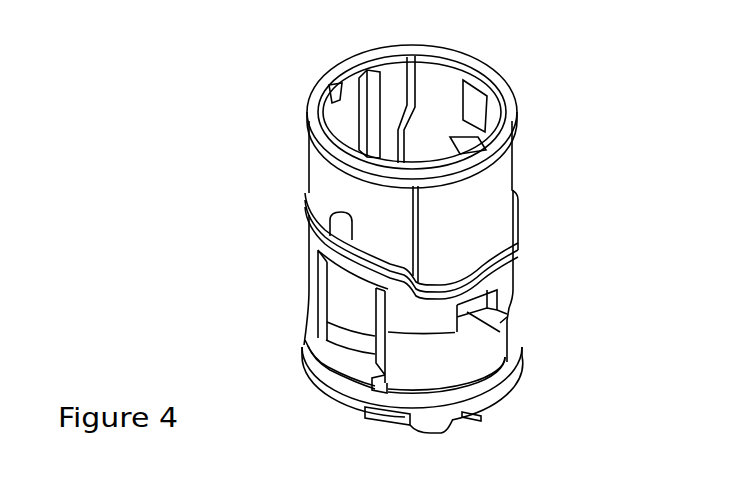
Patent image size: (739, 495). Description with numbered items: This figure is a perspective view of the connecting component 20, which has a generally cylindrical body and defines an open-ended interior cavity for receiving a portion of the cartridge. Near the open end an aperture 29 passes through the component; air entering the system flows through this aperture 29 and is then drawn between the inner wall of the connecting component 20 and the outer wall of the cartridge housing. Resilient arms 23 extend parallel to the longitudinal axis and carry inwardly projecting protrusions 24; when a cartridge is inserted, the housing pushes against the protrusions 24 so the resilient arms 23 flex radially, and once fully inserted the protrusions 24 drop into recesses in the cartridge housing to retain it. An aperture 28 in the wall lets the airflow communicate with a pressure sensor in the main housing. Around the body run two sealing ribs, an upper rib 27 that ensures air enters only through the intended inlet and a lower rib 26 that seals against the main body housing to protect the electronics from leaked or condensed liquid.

The connecting component 20 is at (535, 198).
The resilient arms 23 is at (342, 285).
The inwardly projecting protrusions 24 is at (372, 318).
The lower rib 26 is at (505, 380).
The upper rib 27 is at (518, 256).
The aperture 28 is at (503, 331).
The aperture 29 is at (330, 88).